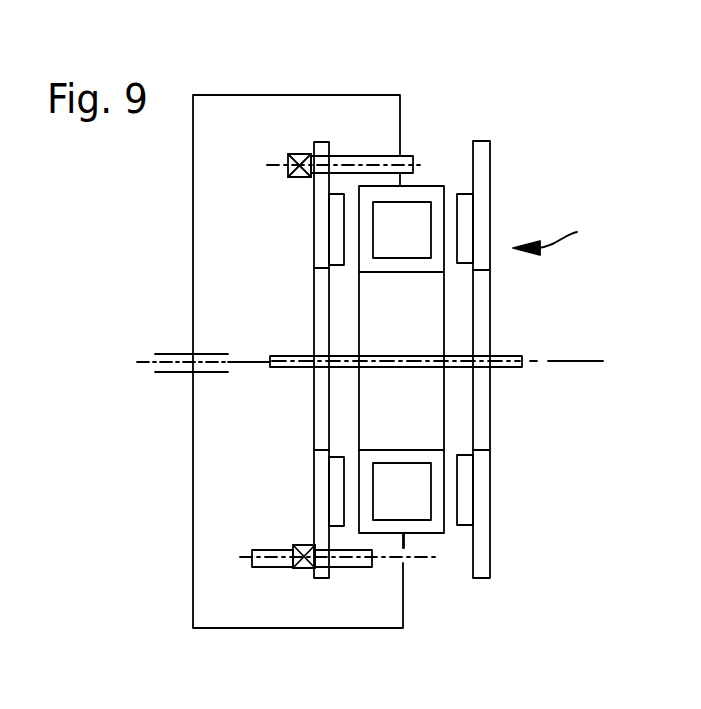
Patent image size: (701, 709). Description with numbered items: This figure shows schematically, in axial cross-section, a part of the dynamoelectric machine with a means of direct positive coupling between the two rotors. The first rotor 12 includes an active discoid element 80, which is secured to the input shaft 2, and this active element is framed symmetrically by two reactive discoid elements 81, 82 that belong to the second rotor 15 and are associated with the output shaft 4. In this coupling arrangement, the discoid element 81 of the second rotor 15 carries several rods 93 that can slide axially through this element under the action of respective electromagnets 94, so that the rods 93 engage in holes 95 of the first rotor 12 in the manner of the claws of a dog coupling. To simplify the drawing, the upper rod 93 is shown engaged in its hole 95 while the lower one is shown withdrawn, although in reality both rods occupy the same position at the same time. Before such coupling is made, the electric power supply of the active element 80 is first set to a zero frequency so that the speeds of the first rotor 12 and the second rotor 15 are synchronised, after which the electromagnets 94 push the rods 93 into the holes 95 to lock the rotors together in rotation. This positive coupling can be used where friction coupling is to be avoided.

The first rotor 12 is at (222, 62).
The input shaft 2 is at (173, 353).
The output shaft 4 is at (293, 356).
The second rotor 15 is at (560, 239).
The active discoid element 80 is at (422, 193).
The reactive discoid element 81 is at (321, 223).
The reactive discoid element 82 is at (482, 206).
The rod 93 is at (363, 156).
The electromagnet 94 is at (300, 153).
The hole 95 is at (403, 562).